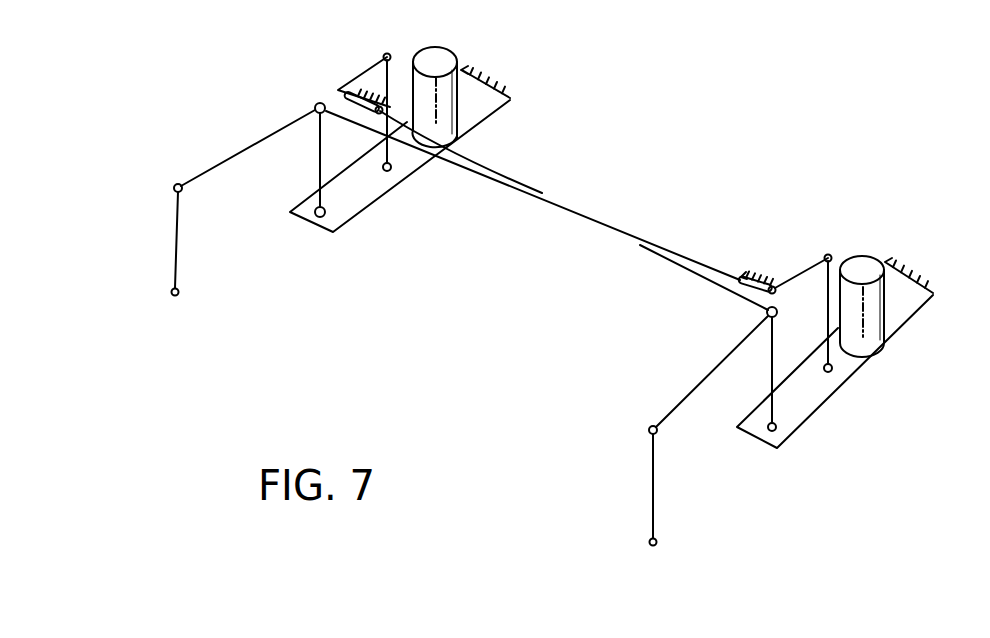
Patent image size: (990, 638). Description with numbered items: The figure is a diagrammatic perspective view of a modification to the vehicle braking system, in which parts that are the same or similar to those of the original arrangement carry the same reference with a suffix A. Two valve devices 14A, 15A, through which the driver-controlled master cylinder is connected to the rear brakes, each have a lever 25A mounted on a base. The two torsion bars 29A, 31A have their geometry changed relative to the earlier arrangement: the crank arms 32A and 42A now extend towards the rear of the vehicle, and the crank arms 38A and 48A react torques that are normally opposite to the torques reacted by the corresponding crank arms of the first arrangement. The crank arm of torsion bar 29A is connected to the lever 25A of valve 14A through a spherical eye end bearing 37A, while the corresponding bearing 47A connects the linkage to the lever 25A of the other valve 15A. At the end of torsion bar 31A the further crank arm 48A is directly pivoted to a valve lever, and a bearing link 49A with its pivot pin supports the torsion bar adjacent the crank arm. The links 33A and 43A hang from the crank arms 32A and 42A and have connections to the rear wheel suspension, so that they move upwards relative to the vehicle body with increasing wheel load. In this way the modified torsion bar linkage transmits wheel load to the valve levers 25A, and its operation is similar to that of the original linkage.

The valve device 14A is at (873, 317).
The valve device 15A is at (473, 115).
The lever 25A is at (387, 195).
The torsion bar 29A is at (687, 268).
The torsion bar 31A is at (565, 209).
The crank arm 32A is at (692, 393).
The link 33A is at (652, 482).
The spherical eye end bearing 37A is at (768, 377).
The crank arm 38A is at (362, 70).
The crank arm 42A is at (252, 142).
The link 43A is at (175, 261).
The bearing 47A is at (320, 152).
The crank arm 48A is at (798, 275).
The bearing link 49A is at (742, 277).